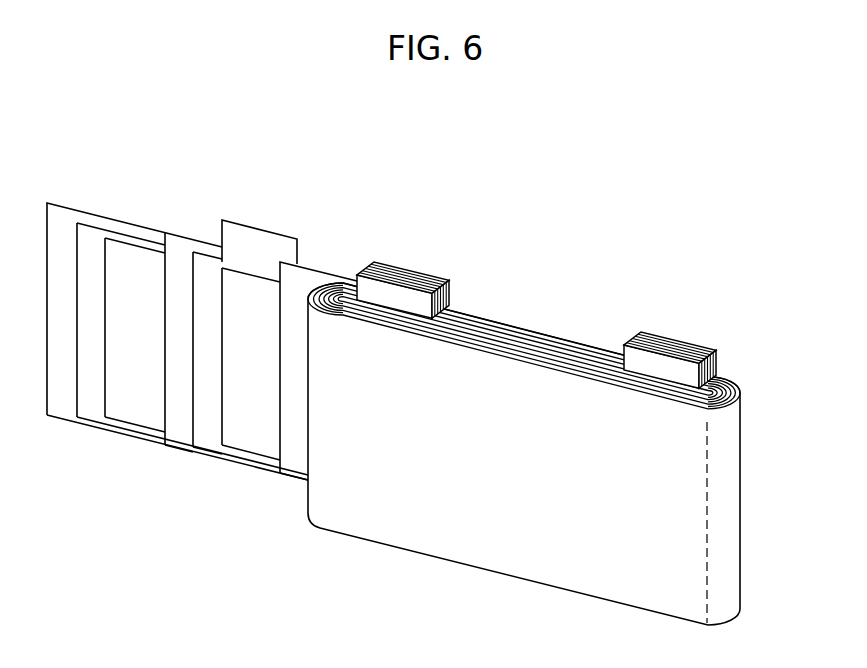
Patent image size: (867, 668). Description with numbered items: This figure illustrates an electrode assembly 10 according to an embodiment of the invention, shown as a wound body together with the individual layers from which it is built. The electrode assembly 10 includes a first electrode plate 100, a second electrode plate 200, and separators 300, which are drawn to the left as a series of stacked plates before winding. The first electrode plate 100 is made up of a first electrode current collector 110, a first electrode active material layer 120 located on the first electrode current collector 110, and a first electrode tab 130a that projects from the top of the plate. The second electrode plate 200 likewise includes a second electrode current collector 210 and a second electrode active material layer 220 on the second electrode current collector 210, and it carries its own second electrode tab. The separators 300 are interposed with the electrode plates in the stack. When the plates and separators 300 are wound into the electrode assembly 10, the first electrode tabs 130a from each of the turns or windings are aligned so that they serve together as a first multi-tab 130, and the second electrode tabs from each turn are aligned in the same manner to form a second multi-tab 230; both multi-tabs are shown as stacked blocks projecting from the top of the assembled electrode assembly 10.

The electrode assembly 10 is at (757, 511).
The first electrode plate 100 is at (263, 292).
The first electrode current collector 110 is at (207, 267).
The first electrode active material layer 120 is at (247, 287).
The first multi-tab 130 is at (406, 270).
The first electrode tab 130a is at (277, 238).
The second electrode plate 200 is at (185, 285).
The second electrode current collector 210 is at (90, 237).
The second electrode active material layer 220 is at (130, 255).
The second multi-tab 230 is at (673, 340).
The separators 300 is at (67, 407).